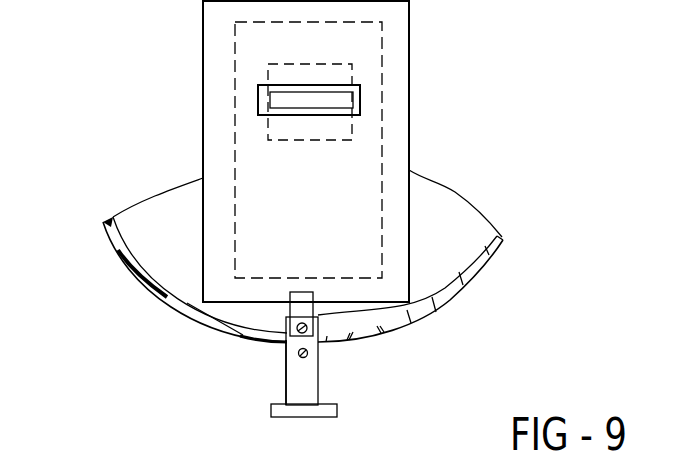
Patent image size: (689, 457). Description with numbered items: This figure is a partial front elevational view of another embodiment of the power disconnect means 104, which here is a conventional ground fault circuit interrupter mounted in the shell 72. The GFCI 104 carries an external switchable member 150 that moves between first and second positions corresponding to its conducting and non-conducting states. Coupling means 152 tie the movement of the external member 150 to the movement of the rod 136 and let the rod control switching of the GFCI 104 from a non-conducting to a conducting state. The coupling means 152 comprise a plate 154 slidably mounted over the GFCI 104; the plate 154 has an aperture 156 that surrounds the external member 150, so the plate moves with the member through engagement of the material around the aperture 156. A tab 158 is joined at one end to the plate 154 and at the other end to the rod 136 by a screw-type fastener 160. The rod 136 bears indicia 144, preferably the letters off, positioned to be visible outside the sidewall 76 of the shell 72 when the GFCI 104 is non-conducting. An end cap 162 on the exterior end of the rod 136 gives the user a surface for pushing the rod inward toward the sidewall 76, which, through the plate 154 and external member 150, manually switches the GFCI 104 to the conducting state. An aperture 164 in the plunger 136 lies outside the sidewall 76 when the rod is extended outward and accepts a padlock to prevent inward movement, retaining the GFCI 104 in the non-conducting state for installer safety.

The shell 72 is at (146, 207).
The sidewall 76 is at (120, 250).
The power disconnect means 104 is at (235, 63).
The rod 136 is at (281, 368).
The indicia 144 is at (323, 377).
The external switchable member 150 is at (344, 100).
The coupling means 152 is at (208, 95).
The plate 154 is at (212, 162).
The aperture 156 is at (276, 105).
The tab 158 is at (300, 297).
The screw-type fastener 160 is at (434, 314).
The end cap 162 is at (338, 408).
The aperture 164 is at (308, 353).